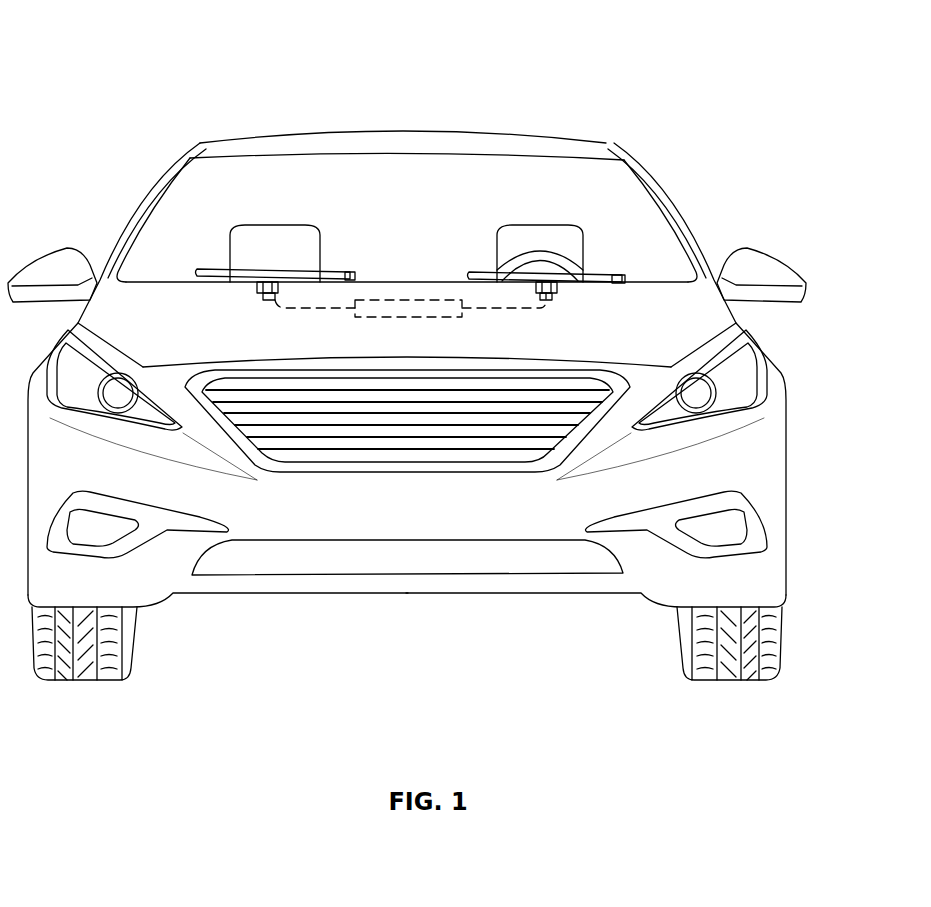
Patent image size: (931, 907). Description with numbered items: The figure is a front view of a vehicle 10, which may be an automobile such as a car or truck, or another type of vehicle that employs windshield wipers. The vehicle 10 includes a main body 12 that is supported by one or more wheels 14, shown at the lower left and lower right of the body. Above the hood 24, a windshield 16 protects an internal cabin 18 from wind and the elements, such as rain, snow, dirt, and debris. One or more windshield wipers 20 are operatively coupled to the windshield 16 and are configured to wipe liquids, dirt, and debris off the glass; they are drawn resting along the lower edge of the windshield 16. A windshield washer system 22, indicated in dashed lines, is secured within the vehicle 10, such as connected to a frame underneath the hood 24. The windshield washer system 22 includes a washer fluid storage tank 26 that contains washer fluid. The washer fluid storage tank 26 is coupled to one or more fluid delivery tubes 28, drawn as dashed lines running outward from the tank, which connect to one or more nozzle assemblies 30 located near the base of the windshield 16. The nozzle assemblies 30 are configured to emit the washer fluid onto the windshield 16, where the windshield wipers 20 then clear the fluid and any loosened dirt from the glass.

The vehicle 10 is at (121, 38).
The main body 12 is at (788, 470).
The wheels 14 is at (90, 682).
The windshield 16 is at (613, 217).
The internal cabin 18 is at (412, 178).
The windshield wipers 20 is at (220, 270).
The windshield washer system 22 is at (417, 315).
The hood 24 is at (670, 297).
The washer fluid storage tank 26 is at (397, 317).
The fluid delivery tubes 28 is at (302, 310).
The nozzle assemblies 30 is at (267, 283).